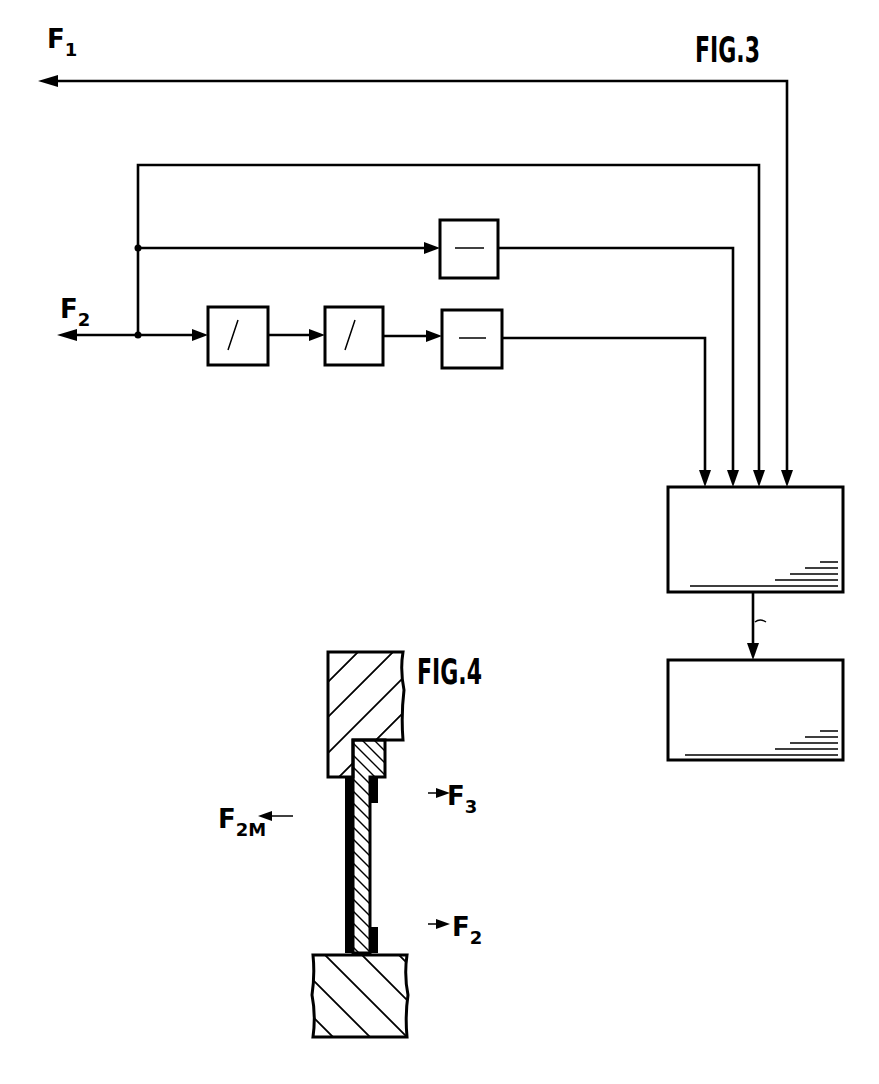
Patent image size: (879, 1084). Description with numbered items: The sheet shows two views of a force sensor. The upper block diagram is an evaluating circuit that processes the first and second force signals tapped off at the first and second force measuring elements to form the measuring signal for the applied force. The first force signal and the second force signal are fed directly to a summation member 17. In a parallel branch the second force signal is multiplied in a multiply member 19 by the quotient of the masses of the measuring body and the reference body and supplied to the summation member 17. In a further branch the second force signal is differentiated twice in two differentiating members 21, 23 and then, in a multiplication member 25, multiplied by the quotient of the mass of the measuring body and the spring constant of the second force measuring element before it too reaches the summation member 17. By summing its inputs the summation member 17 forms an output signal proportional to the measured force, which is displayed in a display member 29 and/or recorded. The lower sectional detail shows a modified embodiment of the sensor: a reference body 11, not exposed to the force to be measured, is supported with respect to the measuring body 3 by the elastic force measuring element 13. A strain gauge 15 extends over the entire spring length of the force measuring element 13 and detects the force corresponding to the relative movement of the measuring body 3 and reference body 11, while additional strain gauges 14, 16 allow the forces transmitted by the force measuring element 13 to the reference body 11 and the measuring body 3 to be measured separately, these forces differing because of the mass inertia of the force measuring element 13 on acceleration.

In FIG. 4, the measuring body 3 is at (393, 1010).
In FIG. 4, the reference body 11 is at (366, 662).
In FIG. 4, the second elastic deformable force measuring element 13 is at (371, 838).
In FIG. 4, the additional strain gauge 14 is at (380, 795).
In FIG. 4, the strain gauge 15 is at (345, 830).
In FIG. 4, the additional strain gauge 16 is at (380, 936).
In FIG. 3, the summation member 17 is at (668, 563).
In FIG. 3, the multiply member 19 is at (498, 224).
In FIG. 3, the differentiating member 21 is at (232, 365).
In FIG. 3, the differentiating member 23 is at (350, 365).
In FIG. 3, the multiplication member 25 is at (470, 368).
In FIG. 3, the display member 29 is at (668, 693).